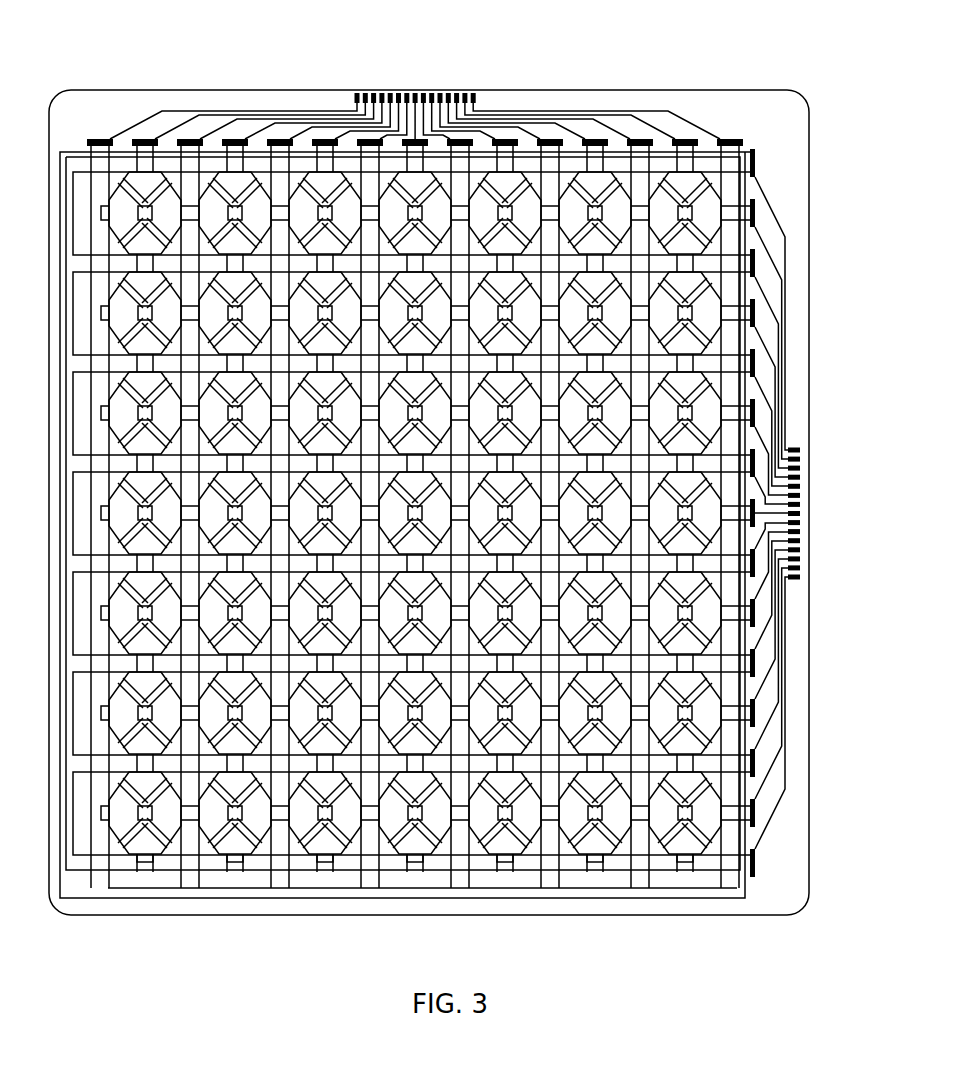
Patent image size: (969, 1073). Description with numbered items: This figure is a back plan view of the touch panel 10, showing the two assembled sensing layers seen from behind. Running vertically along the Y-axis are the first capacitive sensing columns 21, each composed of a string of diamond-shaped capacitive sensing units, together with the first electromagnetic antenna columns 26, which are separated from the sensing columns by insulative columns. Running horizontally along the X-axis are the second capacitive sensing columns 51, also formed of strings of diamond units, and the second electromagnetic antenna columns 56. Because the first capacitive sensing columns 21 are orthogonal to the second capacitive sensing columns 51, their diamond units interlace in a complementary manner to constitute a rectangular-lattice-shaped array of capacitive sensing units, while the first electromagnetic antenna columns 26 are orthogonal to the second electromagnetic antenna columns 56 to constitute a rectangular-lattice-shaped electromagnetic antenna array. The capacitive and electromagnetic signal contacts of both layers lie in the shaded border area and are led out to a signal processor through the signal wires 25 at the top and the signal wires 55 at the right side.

The touch sensor panel 10 is at (188, 97).
The first capacitive sensing column 21 is at (688, 137).
The signal wire 25 is at (299, 117).
The first electromagnetic antenna column 26 is at (637, 137).
The second capacitive sensing column 51 is at (760, 215).
The signal wire 55 is at (790, 390).
The second electromagnetic antenna column 56 is at (760, 162).